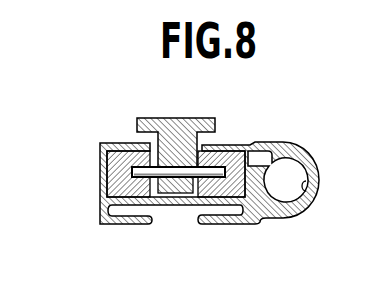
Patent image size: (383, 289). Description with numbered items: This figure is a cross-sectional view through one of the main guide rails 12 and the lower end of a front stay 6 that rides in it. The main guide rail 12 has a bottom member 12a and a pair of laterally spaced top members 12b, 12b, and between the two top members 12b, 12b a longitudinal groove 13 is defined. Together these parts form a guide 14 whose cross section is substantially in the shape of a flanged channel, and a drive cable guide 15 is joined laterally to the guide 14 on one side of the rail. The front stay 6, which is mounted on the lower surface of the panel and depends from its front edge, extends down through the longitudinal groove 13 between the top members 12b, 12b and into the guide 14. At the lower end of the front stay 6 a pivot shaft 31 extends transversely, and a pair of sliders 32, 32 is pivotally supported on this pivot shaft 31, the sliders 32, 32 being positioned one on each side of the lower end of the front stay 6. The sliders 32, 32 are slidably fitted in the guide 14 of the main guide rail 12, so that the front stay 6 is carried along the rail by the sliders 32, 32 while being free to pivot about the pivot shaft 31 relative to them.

The front stay 6 is at (173, 118).
The main guide rail 12 is at (305, 144).
The bottom member 12a is at (183, 209).
The top member 12b is at (127, 145).
The longitudinal groove 13 is at (200, 147).
The guide 14 is at (110, 188).
The drive cable guide 15 is at (303, 189).
The pivot shaft 31 is at (146, 192).
The slider 32 is at (100, 164).